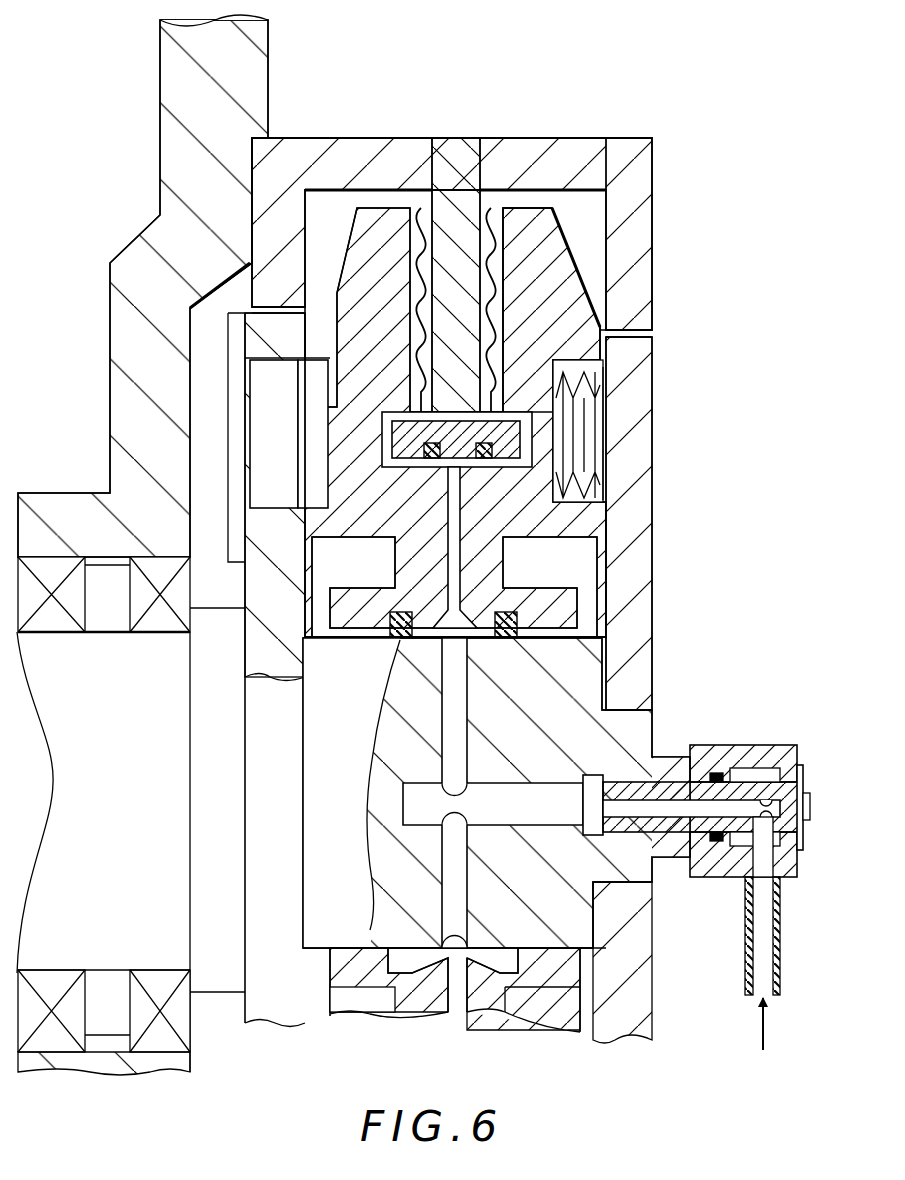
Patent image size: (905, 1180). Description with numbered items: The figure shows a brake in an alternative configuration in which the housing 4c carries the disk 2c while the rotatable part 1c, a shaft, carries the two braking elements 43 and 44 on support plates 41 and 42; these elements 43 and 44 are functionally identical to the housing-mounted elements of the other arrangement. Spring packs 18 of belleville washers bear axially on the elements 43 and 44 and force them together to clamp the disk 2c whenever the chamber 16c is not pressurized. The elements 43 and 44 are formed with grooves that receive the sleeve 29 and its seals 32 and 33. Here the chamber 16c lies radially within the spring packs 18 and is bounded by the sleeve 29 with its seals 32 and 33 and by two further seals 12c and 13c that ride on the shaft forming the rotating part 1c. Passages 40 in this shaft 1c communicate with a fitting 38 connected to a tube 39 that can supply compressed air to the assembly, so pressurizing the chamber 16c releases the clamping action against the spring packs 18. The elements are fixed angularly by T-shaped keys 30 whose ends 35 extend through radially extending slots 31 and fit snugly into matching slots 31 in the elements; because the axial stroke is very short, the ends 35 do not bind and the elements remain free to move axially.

The rotatable part 1c is at (153, 932).
The disk 2c is at (452, 175).
The housing 4c is at (544, 118).
The seal 12c is at (400, 640).
The seal 13c is at (505, 640).
The chamber 16c is at (462, 580).
The spring packs 18 is at (578, 405).
The sleeve 29 is at (480, 432).
The keys 30 is at (268, 378).
The slots 31 is at (312, 353).
The seal 32 is at (482, 465).
The seal 33 is at (432, 465).
The ends of keys 35 is at (315, 452).
The fitting 38 is at (760, 756).
The tube 39 is at (763, 1050).
The passages 40 is at (457, 755).
The support plate 41 is at (272, 600).
The support plate 42 is at (640, 683).
The element 43 is at (378, 232).
The element 44 is at (538, 236).